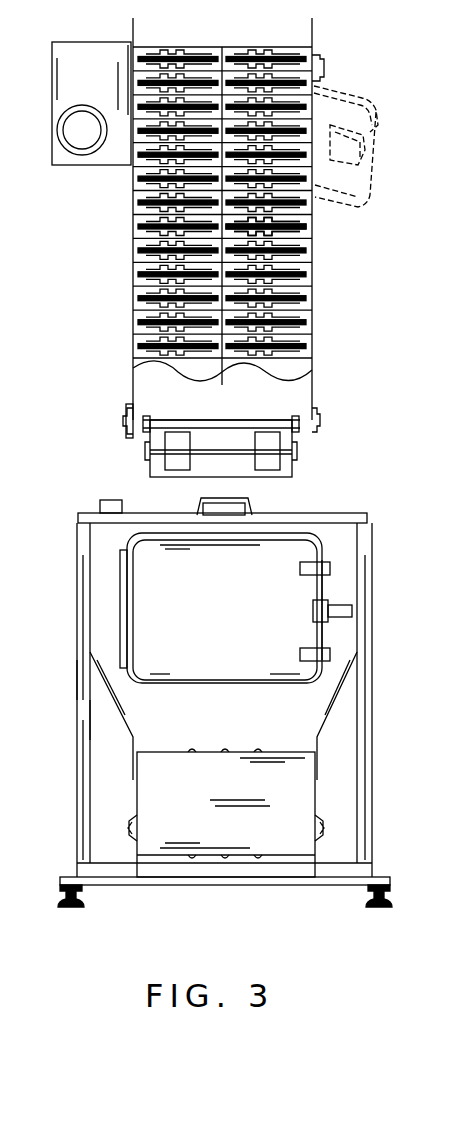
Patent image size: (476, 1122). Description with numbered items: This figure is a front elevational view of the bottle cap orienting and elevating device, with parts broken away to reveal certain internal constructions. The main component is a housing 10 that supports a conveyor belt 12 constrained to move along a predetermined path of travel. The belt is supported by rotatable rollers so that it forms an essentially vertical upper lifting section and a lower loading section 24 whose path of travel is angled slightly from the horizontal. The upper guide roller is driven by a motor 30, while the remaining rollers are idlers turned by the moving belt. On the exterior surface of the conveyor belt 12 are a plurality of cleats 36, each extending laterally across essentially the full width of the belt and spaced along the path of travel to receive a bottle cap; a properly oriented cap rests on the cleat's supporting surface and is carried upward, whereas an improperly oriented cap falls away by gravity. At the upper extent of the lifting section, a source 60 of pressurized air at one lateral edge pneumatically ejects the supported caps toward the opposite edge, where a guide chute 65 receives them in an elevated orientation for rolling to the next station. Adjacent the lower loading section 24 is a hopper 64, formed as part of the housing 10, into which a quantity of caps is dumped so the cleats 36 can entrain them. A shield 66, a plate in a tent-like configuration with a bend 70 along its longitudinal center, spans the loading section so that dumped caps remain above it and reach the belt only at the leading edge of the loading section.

The housing 10 is at (77, 588).
The conveyor belt 12 is at (136, 282).
The lower loading section 24 is at (162, 808).
The motor 30 is at (72, 132).
The cleats 36 is at (305, 228).
The source of pressurized fluid 60 is at (92, 55).
The hopper 64 is at (100, 653).
The guide chute 65 is at (362, 110).
The shield 66 is at (45, 720).
The bend 70 is at (38, 680).